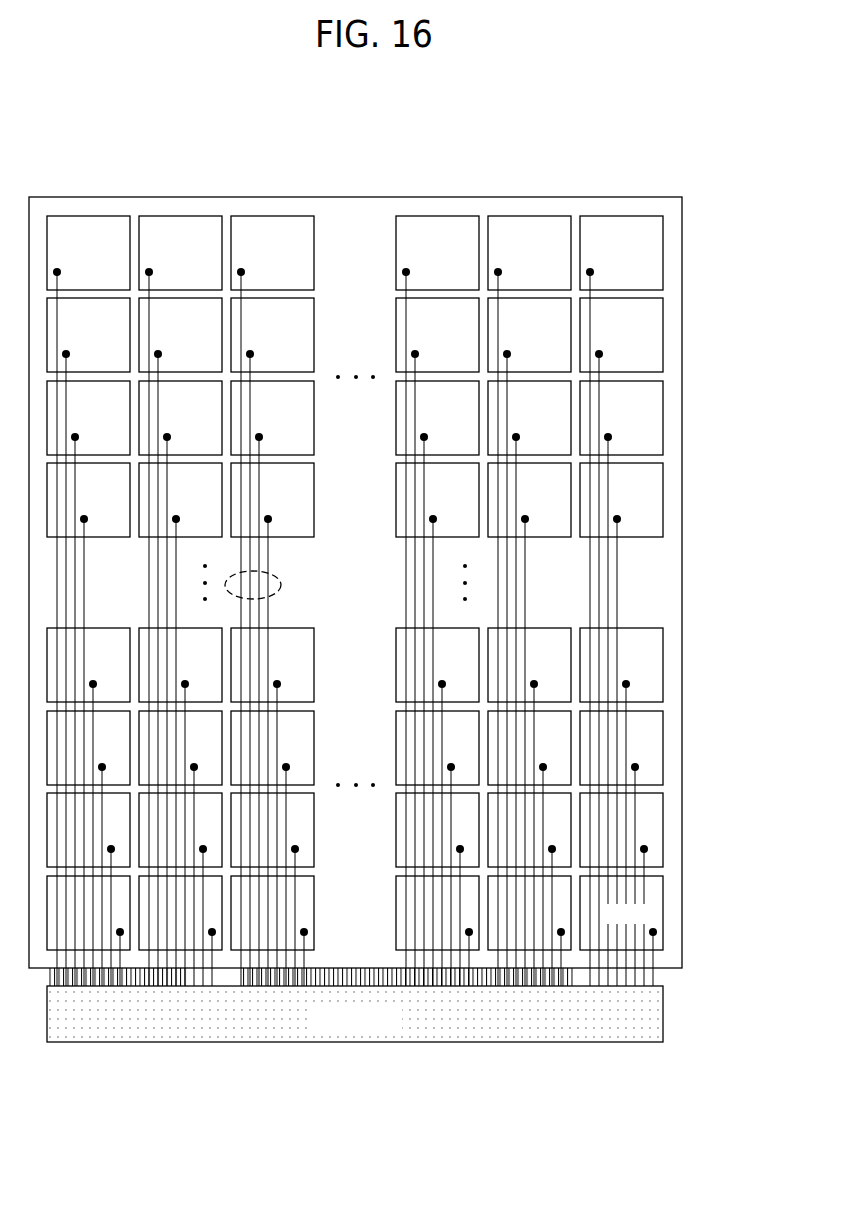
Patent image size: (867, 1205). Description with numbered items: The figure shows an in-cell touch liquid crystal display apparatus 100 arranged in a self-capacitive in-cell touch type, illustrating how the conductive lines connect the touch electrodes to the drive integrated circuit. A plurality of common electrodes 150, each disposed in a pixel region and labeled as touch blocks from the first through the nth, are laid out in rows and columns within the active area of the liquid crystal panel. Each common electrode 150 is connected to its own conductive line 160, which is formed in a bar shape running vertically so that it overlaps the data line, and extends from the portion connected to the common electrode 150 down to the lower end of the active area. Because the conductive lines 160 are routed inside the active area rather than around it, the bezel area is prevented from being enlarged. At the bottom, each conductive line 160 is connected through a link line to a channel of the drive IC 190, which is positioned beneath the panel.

The touch display device 100 is at (395, 133).
The common electrode 150 is at (663, 337).
The conductive line 160 is at (282, 584).
The drive IC 190 is at (663, 1020).